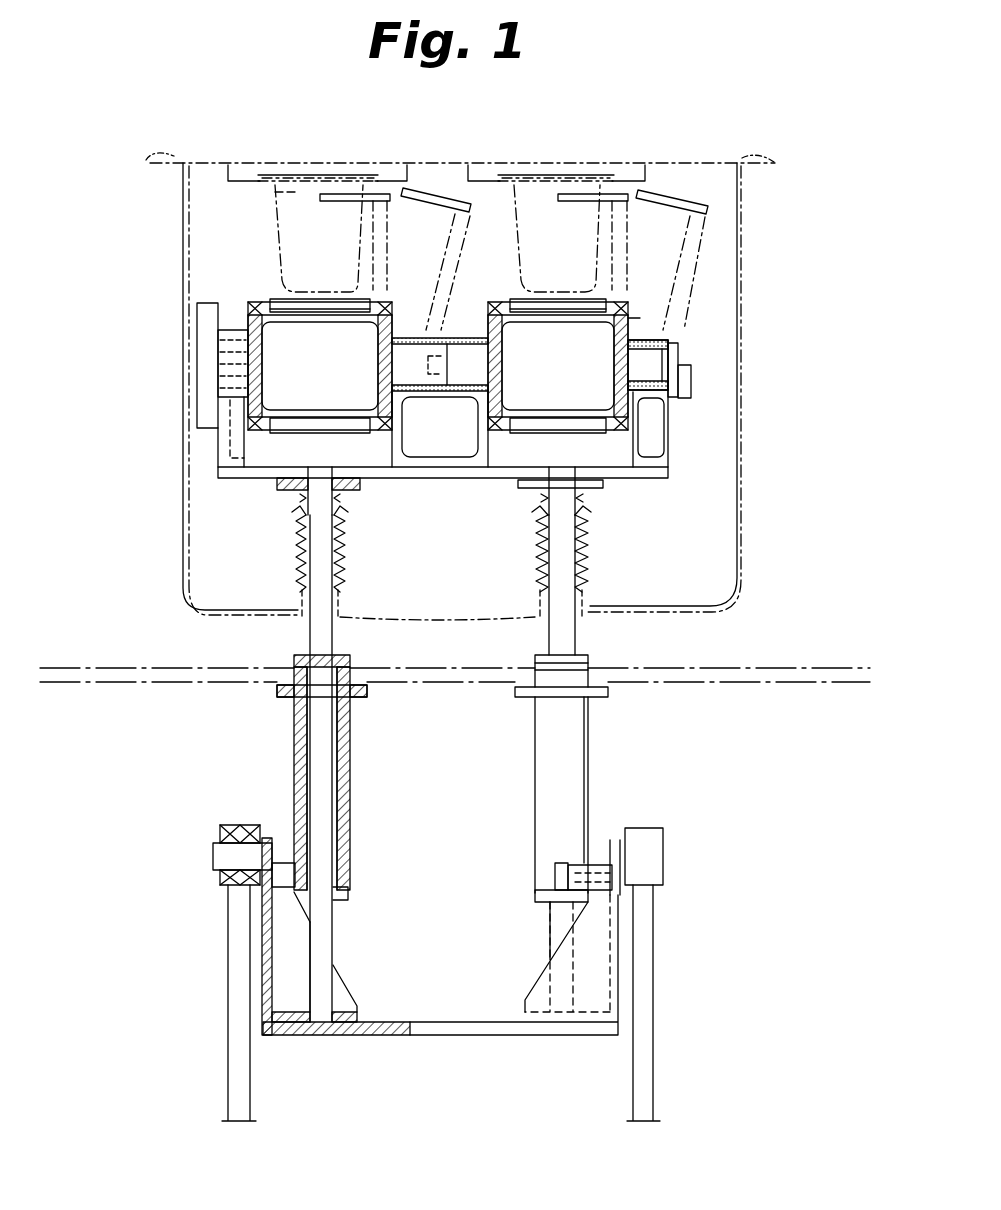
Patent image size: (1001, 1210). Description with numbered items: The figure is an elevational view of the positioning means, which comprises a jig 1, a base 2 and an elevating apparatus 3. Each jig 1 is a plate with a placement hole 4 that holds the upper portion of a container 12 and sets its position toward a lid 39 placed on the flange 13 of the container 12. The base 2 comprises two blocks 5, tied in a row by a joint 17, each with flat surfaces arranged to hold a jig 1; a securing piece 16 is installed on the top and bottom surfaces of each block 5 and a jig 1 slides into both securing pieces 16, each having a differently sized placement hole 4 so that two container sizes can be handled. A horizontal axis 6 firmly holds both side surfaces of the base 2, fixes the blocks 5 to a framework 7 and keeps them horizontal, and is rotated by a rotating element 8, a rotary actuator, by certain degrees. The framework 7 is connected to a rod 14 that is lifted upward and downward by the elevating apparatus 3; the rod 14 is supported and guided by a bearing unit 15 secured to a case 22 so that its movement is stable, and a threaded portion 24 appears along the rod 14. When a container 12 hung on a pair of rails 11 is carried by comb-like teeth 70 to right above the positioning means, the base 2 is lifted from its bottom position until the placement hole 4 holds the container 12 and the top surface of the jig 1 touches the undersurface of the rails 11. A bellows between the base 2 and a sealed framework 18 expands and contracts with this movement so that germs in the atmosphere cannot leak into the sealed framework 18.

The jig 1 is at (598, 302).
The base 2 is at (680, 452).
The elevating apparatus 3 is at (230, 966).
The placement hole 4 is at (286, 302).
The block 5 is at (632, 320).
The horizontal axis 6 is at (652, 373).
The framework 7 is at (236, 479).
The rotating element 8 is at (206, 352).
The rails 11 is at (626, 172).
The container 12 is at (277, 232).
The flange 13 is at (268, 174).
The rod 14 is at (310, 631).
The bearing unit 15 is at (346, 805).
The securing piece 16 is at (612, 304).
The joint 17 is at (463, 376).
The sealed framework 18 is at (738, 603).
The case 22 is at (745, 684).
The threaded rod 24 is at (300, 556).
The lid 39 is at (533, 176).
The comb-like teeth 70 is at (680, 192).